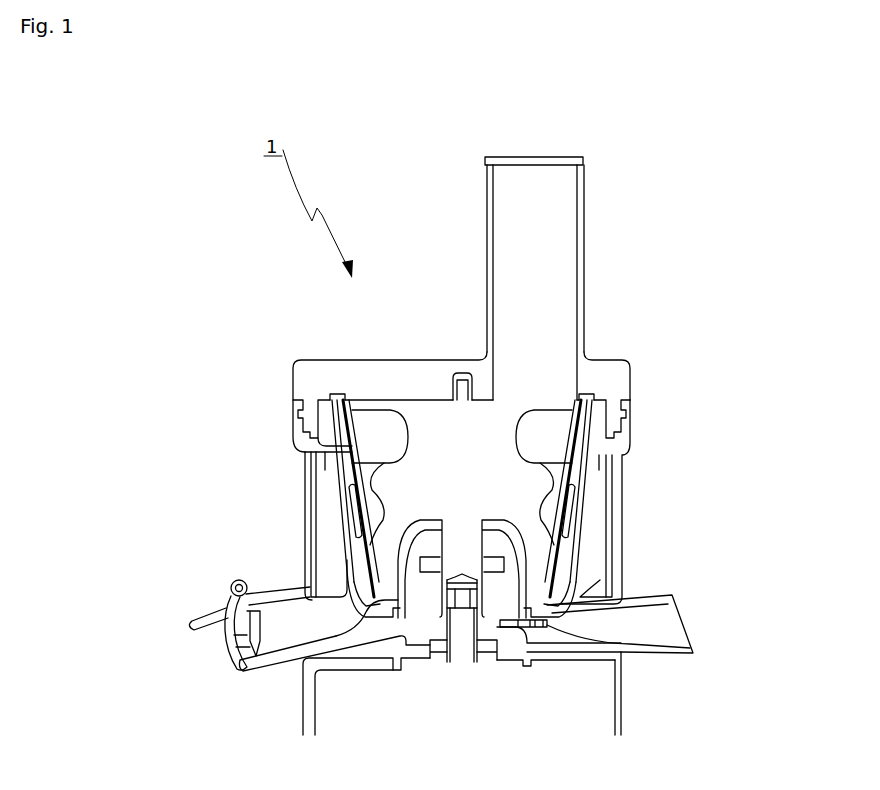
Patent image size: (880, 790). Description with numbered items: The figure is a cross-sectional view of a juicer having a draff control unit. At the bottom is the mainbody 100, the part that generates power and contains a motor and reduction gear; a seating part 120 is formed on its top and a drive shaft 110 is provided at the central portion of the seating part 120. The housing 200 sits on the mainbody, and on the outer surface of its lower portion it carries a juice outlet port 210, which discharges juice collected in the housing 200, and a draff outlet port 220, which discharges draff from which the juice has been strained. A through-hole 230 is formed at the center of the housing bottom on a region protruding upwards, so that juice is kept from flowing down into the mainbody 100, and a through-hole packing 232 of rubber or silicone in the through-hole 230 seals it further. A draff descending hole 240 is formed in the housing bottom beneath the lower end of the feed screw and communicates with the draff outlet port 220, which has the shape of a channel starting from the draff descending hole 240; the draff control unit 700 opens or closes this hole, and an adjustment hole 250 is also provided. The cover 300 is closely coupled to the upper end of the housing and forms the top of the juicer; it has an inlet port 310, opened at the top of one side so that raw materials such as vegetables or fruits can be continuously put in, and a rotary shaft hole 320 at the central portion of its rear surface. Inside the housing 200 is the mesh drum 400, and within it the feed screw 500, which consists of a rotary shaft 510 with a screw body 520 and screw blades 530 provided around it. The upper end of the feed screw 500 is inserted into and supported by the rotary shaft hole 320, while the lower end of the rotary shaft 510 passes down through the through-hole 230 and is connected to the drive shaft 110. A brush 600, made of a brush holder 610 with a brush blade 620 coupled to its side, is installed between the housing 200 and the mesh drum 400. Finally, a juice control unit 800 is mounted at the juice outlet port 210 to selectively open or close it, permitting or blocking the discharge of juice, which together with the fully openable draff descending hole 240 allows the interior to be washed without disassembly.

The mainbody 100 is at (610, 700).
The drive shaft 110 is at (405, 652).
The seating part 120 is at (245, 640).
The housing 200 is at (623, 513).
The juice outlet port 210 is at (265, 672).
The draff outlet port 220 is at (693, 660).
The through-hole 230 is at (428, 550).
The through-hole packing 232 is at (433, 575).
The draff descending hole 240 is at (558, 568).
The adjustment hole 250 is at (478, 662).
The cover 300 is at (617, 358).
The inlet port 310 is at (543, 171).
The rotary shaft hole 320 is at (462, 372).
The mesh drum 400 is at (560, 465).
The feed screw 500 is at (525, 440).
The rotary shaft 510 is at (453, 542).
The screw body 520 is at (415, 420).
The screw blades 530 is at (330, 443).
The brush 600 is at (592, 545).
The brush holder 610 is at (597, 425).
The brush blades 620 is at (322, 478).
The draff control unit 700 is at (550, 625).
The juice control unit 800 is at (232, 590).